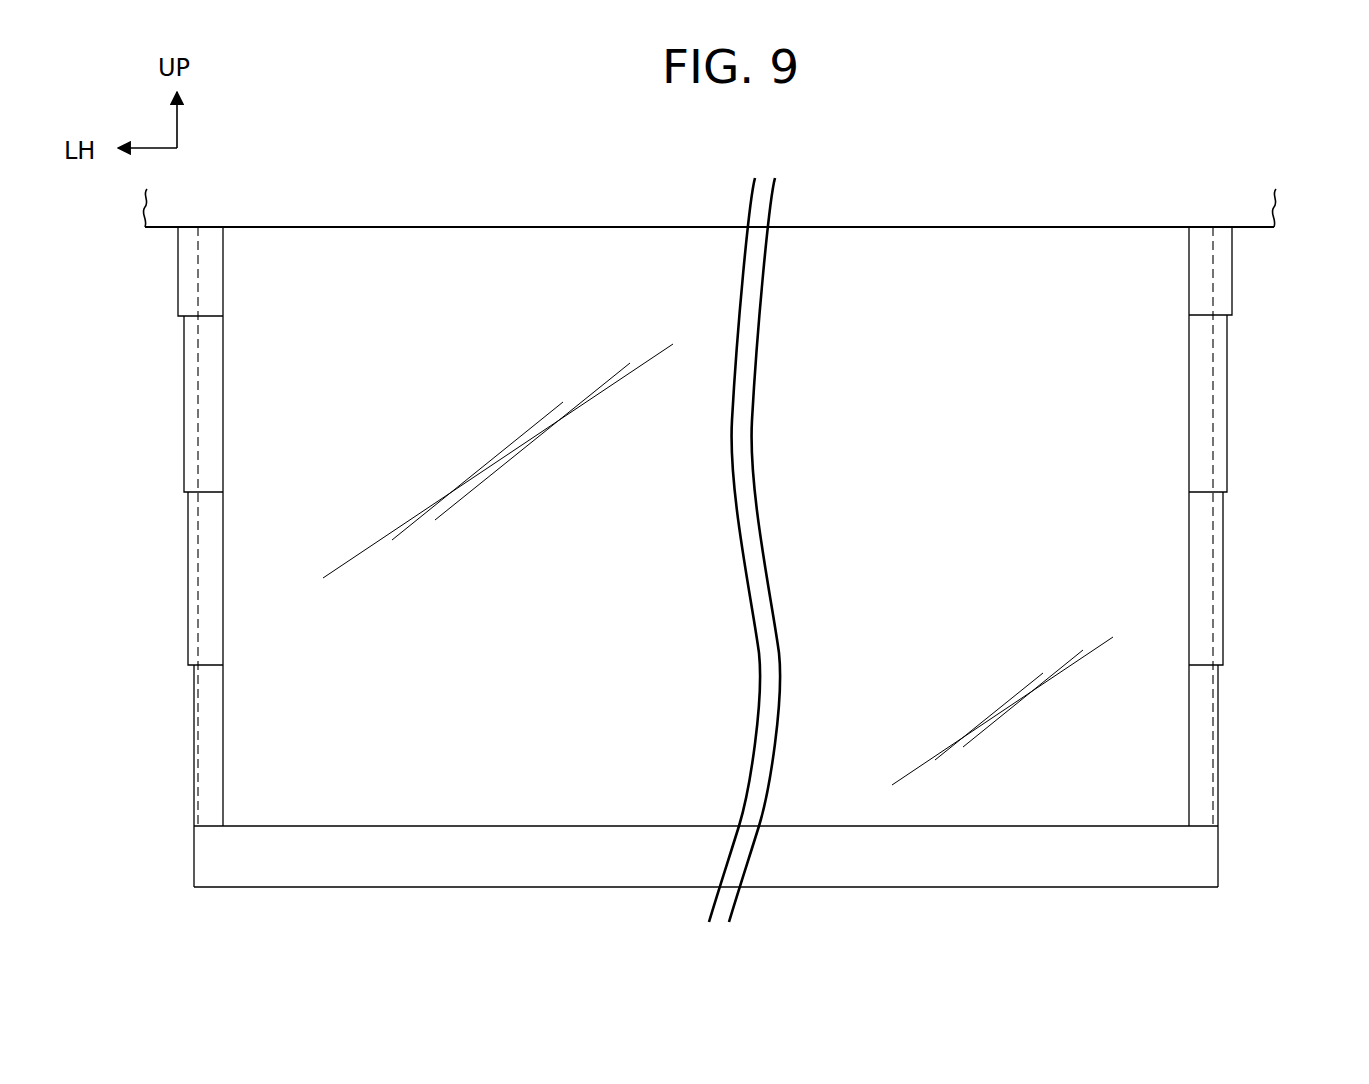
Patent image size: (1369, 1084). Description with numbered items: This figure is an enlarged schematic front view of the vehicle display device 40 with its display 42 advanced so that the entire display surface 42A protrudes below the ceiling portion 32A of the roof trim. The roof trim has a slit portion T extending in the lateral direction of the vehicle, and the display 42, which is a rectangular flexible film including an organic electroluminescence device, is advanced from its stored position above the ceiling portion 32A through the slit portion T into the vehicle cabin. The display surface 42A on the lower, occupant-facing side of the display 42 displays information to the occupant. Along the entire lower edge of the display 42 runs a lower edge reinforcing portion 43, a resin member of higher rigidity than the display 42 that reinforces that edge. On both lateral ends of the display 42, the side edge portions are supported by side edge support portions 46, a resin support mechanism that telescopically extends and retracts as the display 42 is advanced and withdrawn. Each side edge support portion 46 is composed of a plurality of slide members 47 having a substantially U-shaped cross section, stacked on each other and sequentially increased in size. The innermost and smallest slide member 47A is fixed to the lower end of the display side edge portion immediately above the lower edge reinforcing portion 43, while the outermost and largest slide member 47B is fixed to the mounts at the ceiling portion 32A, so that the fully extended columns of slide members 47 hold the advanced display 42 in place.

The ceiling portion 32A is at (468, 228).
The slit portion T is at (893, 234).
The vehicle display device 40 is at (703, 591).
The display 42 is at (734, 840).
The display surface 42A is at (530, 725).
The lower edge reinforcing portion 43 is at (734, 840).
The side edge support portion 46 is at (703, 557).
The slide member 47 is at (184, 392).
The innermost slide member 47A is at (194, 720).
The outermost slide member 47B is at (178, 248).